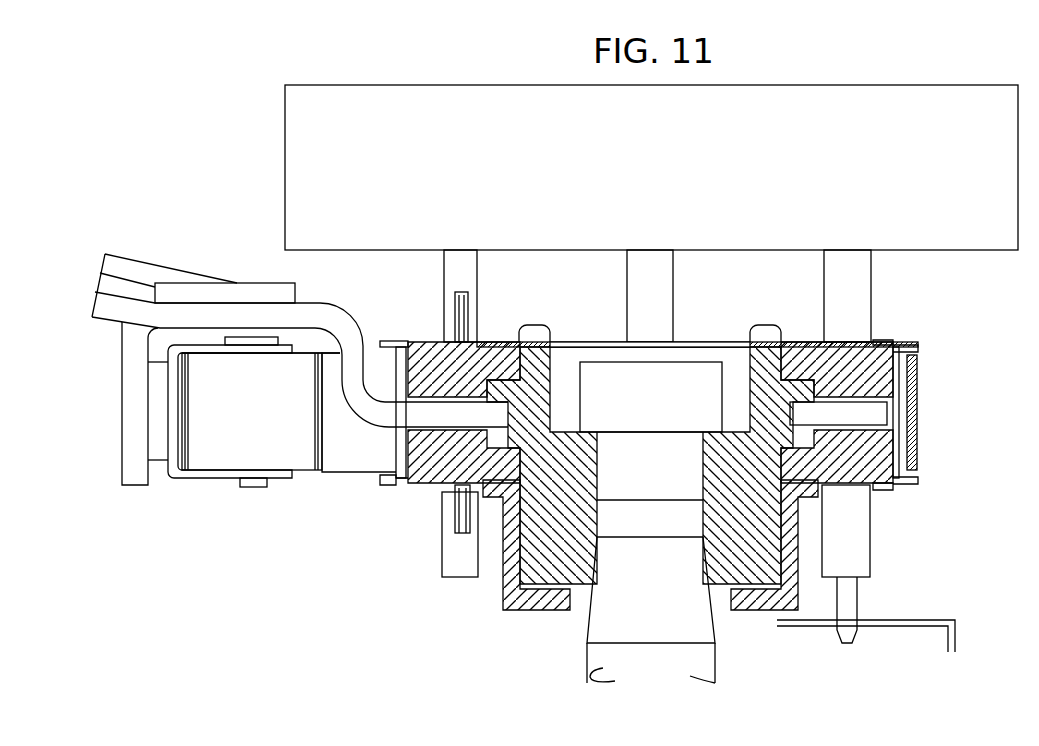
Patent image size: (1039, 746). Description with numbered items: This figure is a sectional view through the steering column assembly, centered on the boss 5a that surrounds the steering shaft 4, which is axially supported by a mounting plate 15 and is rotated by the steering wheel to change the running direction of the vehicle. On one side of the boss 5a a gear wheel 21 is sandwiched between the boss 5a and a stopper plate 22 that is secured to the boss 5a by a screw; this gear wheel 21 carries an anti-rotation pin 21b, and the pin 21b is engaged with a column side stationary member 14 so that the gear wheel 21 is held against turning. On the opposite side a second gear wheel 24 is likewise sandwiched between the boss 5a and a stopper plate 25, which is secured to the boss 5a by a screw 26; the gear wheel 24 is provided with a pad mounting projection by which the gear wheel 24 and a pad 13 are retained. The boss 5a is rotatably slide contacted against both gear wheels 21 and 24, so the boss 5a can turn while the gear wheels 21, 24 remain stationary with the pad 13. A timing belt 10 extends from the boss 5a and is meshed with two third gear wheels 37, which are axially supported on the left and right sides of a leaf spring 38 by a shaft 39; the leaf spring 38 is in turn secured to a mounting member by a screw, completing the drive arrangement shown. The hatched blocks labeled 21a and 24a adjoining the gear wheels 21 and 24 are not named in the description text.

The steering shaft 4 is at (598, 668).
The boss 5a is at (547, 540).
The timing belt 10 is at (355, 455).
The pad 13 is at (300, 120).
The column side stationary member 14 is at (955, 640).
The mounting plate 15 is at (137, 433).
The gear wheel 21 is at (883, 487).
The lower left bearing block 21a is at (402, 467).
The anti-rotation pin 21b is at (848, 607).
The stopper plate 22 is at (508, 597).
The gear wheel 24 is at (863, 353).
The upper left bearing block 24a is at (402, 365).
The stopper plate 25 is at (800, 342).
The screw 26 is at (540, 320).
The third gear wheel 37 is at (208, 365).
The leaf spring 38 is at (180, 480).
The shaft 39 is at (258, 483).